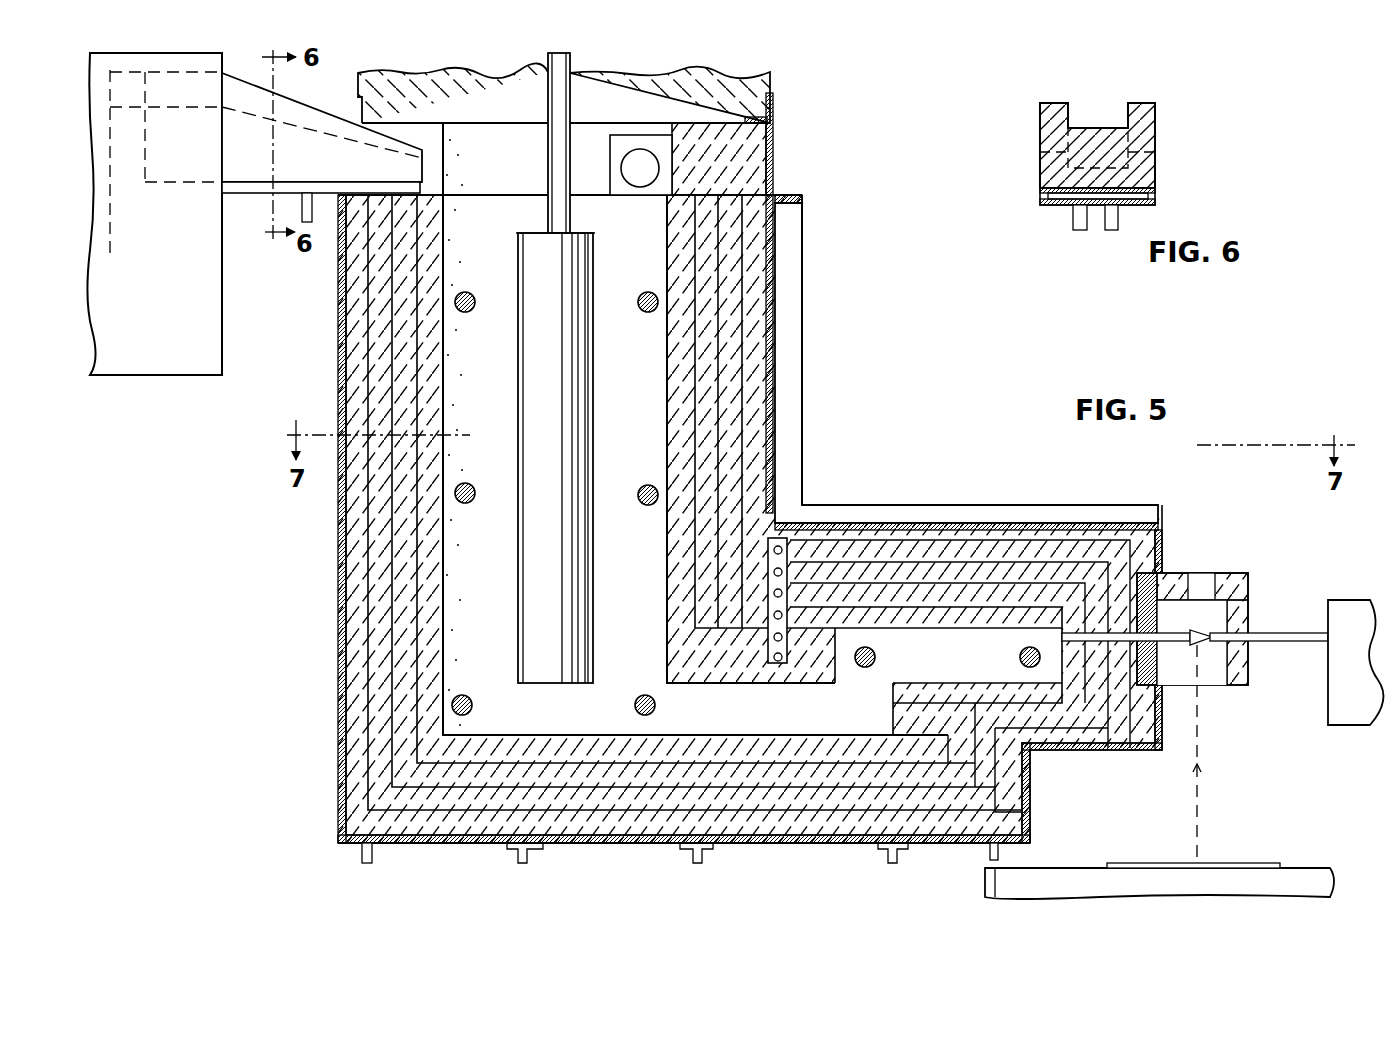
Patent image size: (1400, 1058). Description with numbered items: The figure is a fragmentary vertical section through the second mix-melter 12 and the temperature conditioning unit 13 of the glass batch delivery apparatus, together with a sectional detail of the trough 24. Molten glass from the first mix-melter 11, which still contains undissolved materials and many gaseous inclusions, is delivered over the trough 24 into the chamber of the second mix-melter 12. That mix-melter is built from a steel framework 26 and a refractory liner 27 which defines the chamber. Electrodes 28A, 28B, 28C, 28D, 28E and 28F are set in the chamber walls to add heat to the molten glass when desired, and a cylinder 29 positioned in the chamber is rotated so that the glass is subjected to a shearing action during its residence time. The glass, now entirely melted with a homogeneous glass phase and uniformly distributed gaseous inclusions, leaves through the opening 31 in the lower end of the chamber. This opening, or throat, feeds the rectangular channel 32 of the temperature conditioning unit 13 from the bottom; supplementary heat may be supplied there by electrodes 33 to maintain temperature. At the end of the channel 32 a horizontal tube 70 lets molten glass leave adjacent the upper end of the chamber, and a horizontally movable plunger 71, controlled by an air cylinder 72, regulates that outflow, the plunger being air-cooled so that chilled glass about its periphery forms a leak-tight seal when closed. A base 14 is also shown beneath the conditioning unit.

In FIG. 5, the first mix-melter 11 is at (164, 378).
In FIG. 5, the second mix-melter 12 is at (808, 277).
In FIG. 5, the temperature conditioning unit 13 is at (750, 468).
In FIG. 5, the base plate 14 is at (1260, 851).
In FIG. 5, the trough 24 is at (245, 175).
In FIG. 6, the trough 24 is at (1042, 166).
In FIG. 5, the steel framework 26 is at (518, 860).
In FIG. 5, the refractory liner 27 is at (452, 650).
In FIG. 5, the electrode 28A is at (473, 706).
In FIG. 5, the electrode 28B is at (465, 484).
In FIG. 5, the electrode 28C is at (466, 313).
In FIG. 5, the electrode 28D is at (641, 293).
In FIG. 5, the electrode 28E is at (640, 487).
In FIG. 5, the electrode 28F is at (641, 696).
In FIG. 5, the cylinder 29 is at (530, 545).
In FIG. 5, the opening 31 is at (758, 733).
In FIG. 5, the rectangular channel 32 is at (975, 625).
In FIG. 5, the electrodes 33 is at (864, 668).
In FIG. 5, the horizontal tube 70 is at (1172, 628).
In FIG. 5, the horizontally movable plunger 71 is at (1277, 632).
In FIG. 5, the air cylinder 72 is at (1352, 600).